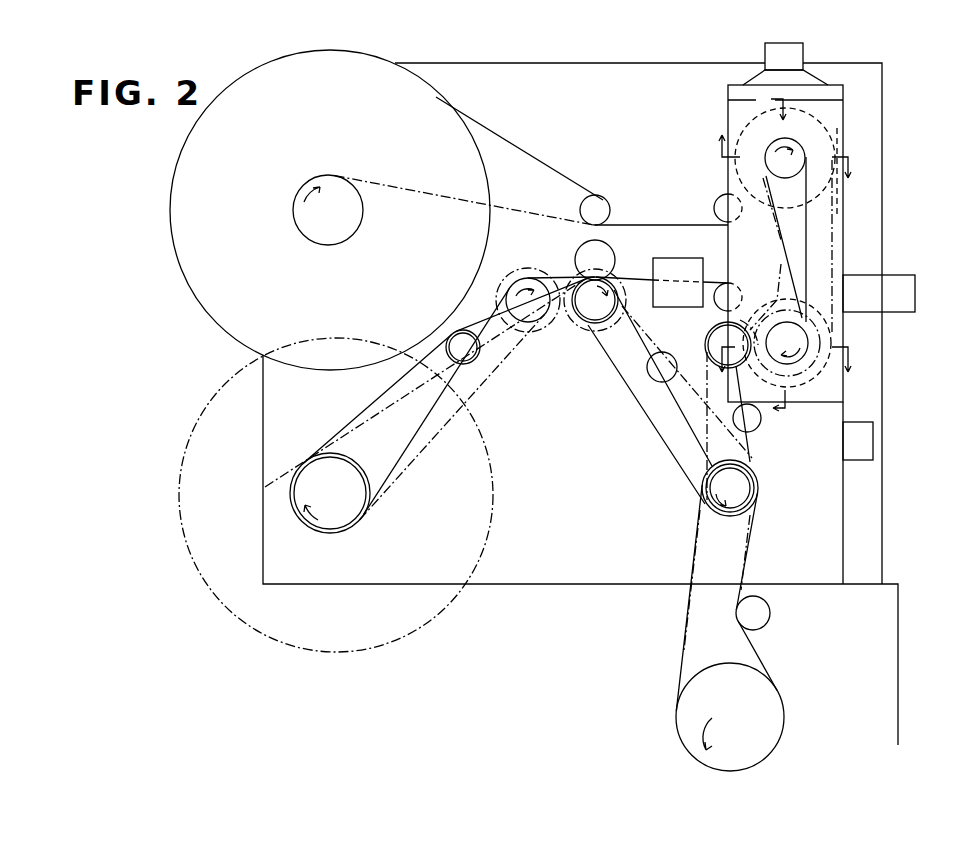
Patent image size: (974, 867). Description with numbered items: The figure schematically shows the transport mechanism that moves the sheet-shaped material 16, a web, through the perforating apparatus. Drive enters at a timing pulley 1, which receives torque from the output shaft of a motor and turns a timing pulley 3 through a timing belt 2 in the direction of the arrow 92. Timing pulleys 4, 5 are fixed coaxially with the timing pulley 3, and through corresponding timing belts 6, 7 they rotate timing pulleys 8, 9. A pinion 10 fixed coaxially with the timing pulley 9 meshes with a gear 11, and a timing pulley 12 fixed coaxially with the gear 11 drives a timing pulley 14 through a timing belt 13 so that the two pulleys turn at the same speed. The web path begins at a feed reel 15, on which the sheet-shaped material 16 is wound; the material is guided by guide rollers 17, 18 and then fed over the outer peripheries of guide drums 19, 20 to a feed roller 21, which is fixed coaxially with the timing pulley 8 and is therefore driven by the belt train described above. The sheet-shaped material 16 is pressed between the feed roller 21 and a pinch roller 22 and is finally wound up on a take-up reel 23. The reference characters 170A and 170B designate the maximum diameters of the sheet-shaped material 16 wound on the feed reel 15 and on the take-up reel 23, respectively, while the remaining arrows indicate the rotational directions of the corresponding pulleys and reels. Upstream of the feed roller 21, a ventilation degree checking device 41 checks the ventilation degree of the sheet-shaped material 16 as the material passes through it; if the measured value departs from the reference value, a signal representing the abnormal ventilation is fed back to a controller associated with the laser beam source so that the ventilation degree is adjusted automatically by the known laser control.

The timing pulley 1 is at (777, 704).
The timing belt 2 is at (757, 648).
The timing pulley 3 is at (759, 480).
The timing pulley 4 is at (742, 510).
The timing pulley 5 is at (757, 492).
The timing belt 6 is at (662, 452).
The timing belt 7 is at (760, 428).
The timing pulley 8 is at (565, 316).
The timing pulley 9 is at (712, 332).
The pinion 10 is at (674, 377).
The gear 11 is at (830, 341).
The timing pulley 12 is at (792, 343).
The timing belt 13 is at (812, 258).
The timing pulley 14 is at (800, 158).
The feed reel 15 is at (319, 226).
The sheet-shaped material 16 is at (497, 205).
The guide roller 17 is at (600, 200).
The guide roller 18 is at (716, 205).
The guide drum 19 is at (826, 130).
The guide drum 20 is at (822, 386).
The feed roller 21 is at (597, 321).
The pinch roller 22 is at (578, 259).
The take-up reel 23 is at (291, 492).
The ventilation degree checking device 41 is at (653, 269).
The arrow 92 is at (725, 612).
The maximum diameter of sheet-shaped material on feed reel 170A is at (378, 57).
The maximum diameter of sheet-shaped material on take-up reel 170B is at (208, 380).